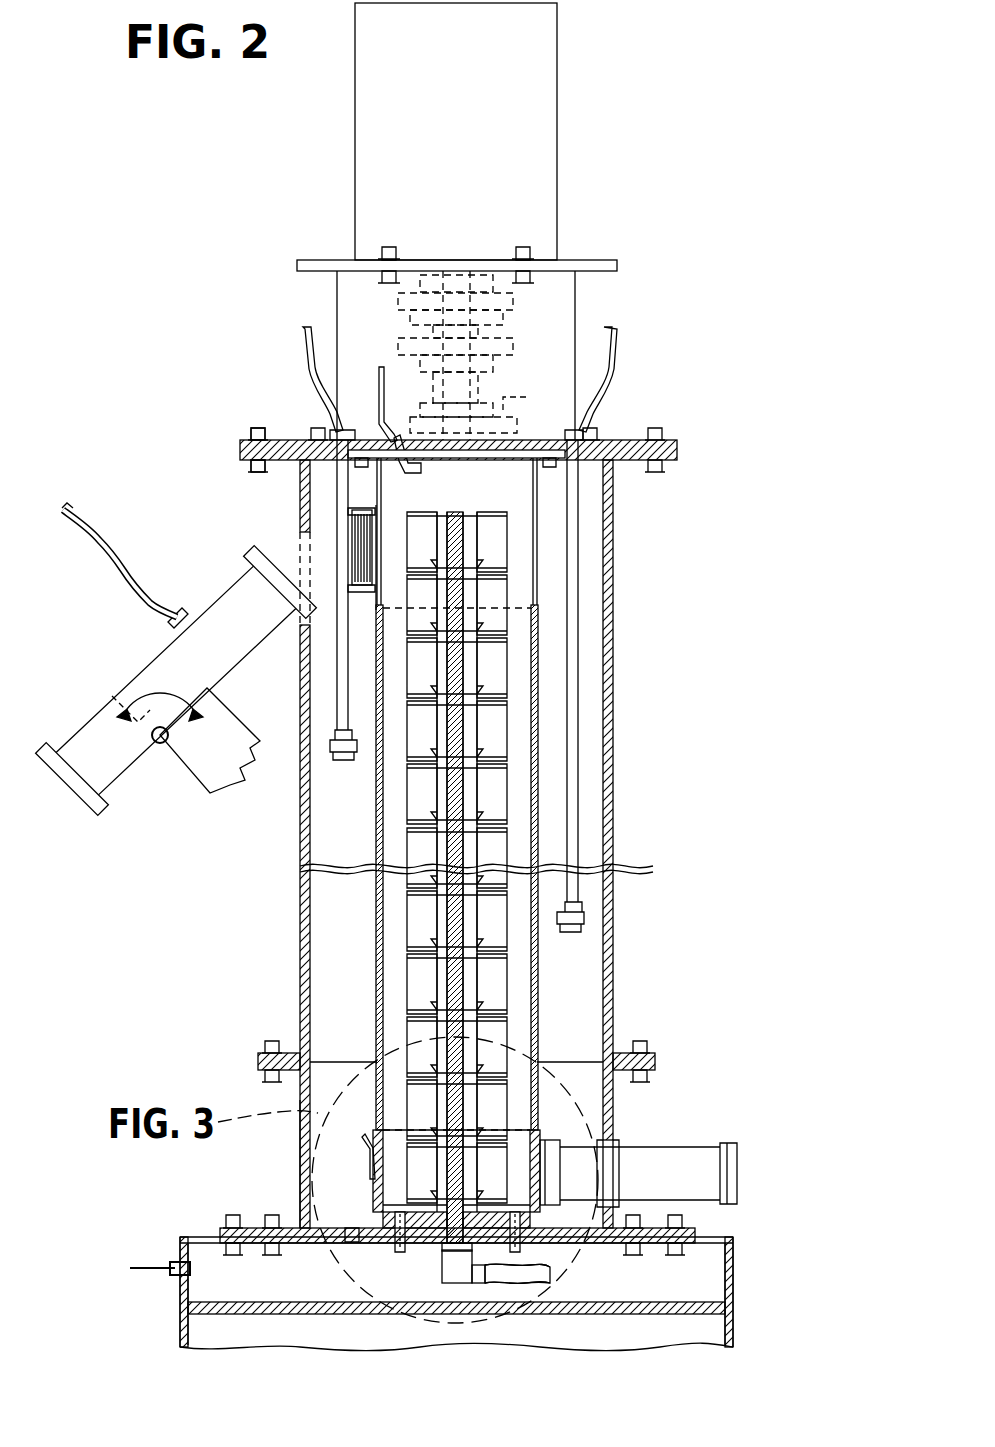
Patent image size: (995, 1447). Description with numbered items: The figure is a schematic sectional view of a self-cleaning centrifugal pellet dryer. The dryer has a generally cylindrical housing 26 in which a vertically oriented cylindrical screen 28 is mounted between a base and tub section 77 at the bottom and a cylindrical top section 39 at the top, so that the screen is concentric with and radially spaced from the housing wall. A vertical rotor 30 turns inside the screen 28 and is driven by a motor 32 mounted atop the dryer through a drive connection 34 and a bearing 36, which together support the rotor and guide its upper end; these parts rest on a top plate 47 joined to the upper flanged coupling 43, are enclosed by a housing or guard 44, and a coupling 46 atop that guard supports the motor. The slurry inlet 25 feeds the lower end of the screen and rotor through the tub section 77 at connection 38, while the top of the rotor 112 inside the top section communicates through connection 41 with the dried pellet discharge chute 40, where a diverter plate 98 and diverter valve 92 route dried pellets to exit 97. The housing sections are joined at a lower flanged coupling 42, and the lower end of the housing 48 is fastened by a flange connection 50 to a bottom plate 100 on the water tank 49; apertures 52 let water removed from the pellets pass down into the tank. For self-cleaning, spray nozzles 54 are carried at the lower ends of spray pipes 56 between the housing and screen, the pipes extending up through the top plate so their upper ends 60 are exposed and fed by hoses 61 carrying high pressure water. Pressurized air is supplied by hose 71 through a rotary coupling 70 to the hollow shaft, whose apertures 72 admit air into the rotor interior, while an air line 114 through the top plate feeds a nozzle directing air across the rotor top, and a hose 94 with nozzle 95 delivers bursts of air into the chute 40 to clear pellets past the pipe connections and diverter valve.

The motor 32 is at (535, 128).
The coupling 46 is at (530, 250).
The drive connection 34 is at (540, 320).
The housing or guard 44 is at (552, 337).
The hoses or lines 61 is at (303, 333).
The upper ends of the spray pipes 60 is at (563, 430).
The flanged coupling 43 is at (680, 445).
The top plate 47 is at (275, 440).
The air hose or line 114 is at (381, 380).
The bottom plate 100 is at (410, 442).
The bearing 36 is at (503, 403).
The cylindrical top section 39 is at (532, 486).
The vertical rotor 30 is at (480, 535).
The apertures 72 is at (462, 680).
The cylindrical housing 26 is at (608, 700).
The cylindrical screen 28 is at (540, 753).
The spray pipes 56 is at (336, 700).
The spray nozzles 54 is at (345, 762).
The flanged coupling 42 is at (655, 1060).
The lower end of the housing 48 is at (305, 1150).
The base and tub section 77 is at (380, 1185).
The connection 38 is at (548, 1147).
The slurry inlet 25 is at (700, 1163).
The flange connection 50 is at (690, 1232).
The apertures 52 is at (354, 1239).
The water tank 49 is at (735, 1273).
The rotary coupling 70 is at (439, 1269).
The hose or line 71 is at (520, 1277).
The top of the rotor 112 is at (362, 518).
The connection 41 is at (376, 510).
The dried pellet discharge chute 40 is at (220, 600).
The exit 97 is at (92, 792).
The nozzle 95 is at (165, 630).
The hose 94 is at (100, 540).
The diverter valve 92 is at (100, 703).
The diverter plate 98 is at (205, 765).